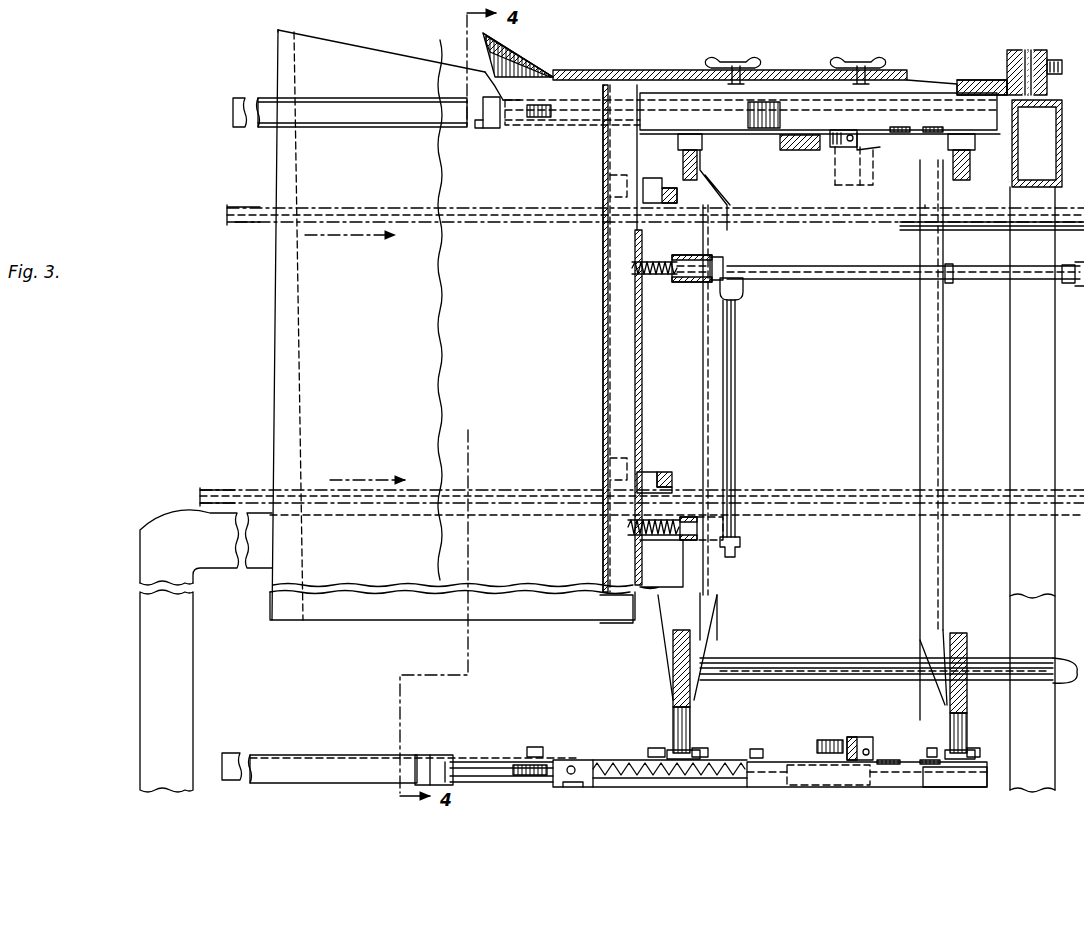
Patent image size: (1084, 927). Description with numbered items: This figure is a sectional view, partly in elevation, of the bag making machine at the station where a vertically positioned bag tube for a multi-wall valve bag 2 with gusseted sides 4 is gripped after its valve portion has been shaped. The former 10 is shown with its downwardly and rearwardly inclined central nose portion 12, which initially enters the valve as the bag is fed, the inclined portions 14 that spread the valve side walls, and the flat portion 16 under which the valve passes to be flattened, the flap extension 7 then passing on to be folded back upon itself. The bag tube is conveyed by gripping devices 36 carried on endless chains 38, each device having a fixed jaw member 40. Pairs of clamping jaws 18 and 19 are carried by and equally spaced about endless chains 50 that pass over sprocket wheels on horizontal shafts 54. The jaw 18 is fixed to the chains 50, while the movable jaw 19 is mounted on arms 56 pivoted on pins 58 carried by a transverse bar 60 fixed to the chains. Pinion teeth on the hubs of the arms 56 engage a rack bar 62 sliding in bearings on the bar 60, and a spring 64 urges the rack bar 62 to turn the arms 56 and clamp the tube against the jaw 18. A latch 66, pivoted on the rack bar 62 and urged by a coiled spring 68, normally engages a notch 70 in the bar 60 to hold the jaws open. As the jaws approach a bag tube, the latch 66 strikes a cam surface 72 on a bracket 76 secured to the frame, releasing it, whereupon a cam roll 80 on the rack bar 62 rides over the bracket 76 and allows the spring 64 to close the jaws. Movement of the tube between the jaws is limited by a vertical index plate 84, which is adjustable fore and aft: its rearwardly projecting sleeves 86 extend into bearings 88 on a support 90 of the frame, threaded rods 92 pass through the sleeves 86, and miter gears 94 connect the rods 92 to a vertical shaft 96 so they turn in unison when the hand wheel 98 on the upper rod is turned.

The bag 2 is at (268, 327).
The gusseted sides 4 is at (283, 372).
The flap extension 7 is at (504, 92).
The former 10 is at (542, 58).
The central nose portion 12 is at (487, 54).
The inclined portions 14 is at (513, 50).
The flat portion 16 is at (560, 74).
The clamping jaw 18 is at (250, 98).
The movable clamping jaw 19 is at (483, 100).
The gripping devices 36 is at (658, 186).
The endless chains 38 is at (243, 230).
The fixed jaw member 40 is at (610, 178).
The endless chains 50 is at (700, 146).
The horizontal shafts 54 is at (966, 235).
The arms 56 is at (495, 767).
The pins 58 is at (546, 128).
The transverse bar 60 is at (1000, 130).
The rack bar 62 is at (483, 130).
The spring 64 is at (615, 763).
The latch 66 is at (885, 135).
The coiled spring 68 is at (848, 150).
The notch 70 is at (905, 131).
The cam surface 72 is at (872, 150).
The bracket 76 is at (790, 150).
The cam roll 80 is at (830, 150).
The index plate 84 is at (641, 352).
The sleeves 86 is at (660, 265).
The bearings 88 is at (693, 256).
The support 90 is at (920, 345).
The rods 92 is at (663, 283).
The miter gears 94 is at (735, 260).
The vertical shaft 96 is at (736, 387).
The hand wheel 98 is at (1083, 292).